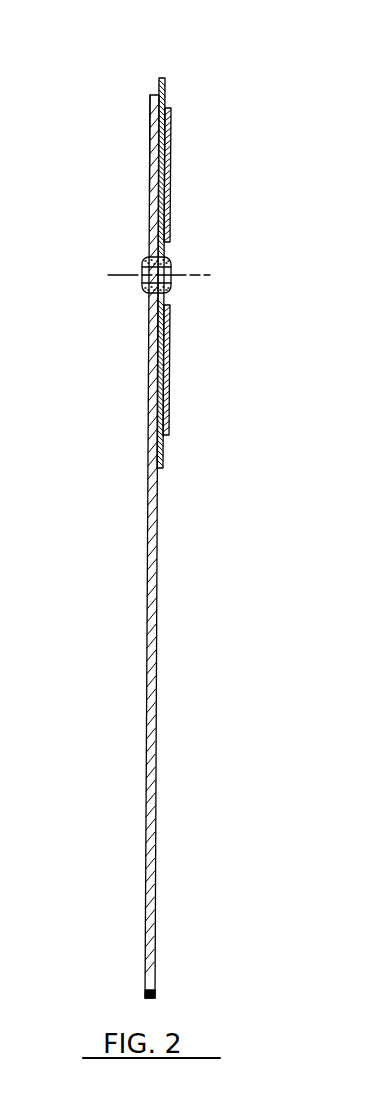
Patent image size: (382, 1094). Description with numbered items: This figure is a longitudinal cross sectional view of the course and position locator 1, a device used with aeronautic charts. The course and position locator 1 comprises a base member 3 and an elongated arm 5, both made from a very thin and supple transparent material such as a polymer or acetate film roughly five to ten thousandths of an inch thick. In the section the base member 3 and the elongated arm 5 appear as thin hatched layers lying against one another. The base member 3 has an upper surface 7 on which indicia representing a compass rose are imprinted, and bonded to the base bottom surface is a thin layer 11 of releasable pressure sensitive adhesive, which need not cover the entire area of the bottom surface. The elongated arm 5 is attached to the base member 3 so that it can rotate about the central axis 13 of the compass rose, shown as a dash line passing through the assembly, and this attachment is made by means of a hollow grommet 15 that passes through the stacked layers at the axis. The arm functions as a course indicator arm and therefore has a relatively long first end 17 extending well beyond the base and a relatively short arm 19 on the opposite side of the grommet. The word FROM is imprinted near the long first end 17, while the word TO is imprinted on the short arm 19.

The course and position locator 1 is at (183, 176).
The base member 3 is at (157, 81).
The elongated arm 5 is at (157, 606).
The upper surface 7 is at (153, 140).
The thin layer of releasable pressure sensitive adhesive 11 is at (172, 367).
The central axis 13 is at (198, 275).
The hollow grommet 15 is at (170, 258).
The first end 17 is at (148, 890).
The short arm 19 is at (150, 192).